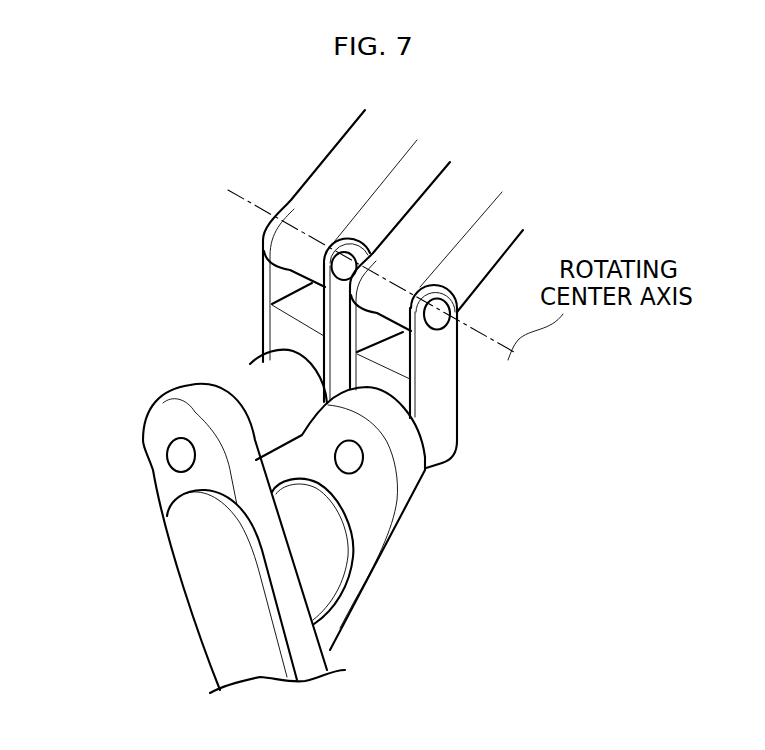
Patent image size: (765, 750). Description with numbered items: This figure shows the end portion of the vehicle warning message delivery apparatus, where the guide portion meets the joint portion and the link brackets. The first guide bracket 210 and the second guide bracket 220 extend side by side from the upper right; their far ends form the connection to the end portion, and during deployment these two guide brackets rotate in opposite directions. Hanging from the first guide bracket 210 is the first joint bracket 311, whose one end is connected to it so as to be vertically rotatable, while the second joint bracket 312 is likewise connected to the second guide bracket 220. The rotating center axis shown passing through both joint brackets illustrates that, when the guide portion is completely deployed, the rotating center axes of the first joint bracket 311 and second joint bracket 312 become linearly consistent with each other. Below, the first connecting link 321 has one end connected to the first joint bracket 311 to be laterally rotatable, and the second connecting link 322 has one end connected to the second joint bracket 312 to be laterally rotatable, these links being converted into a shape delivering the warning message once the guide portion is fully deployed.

The first guide bracket 210 is at (330, 170).
The second guide bracket 220 is at (455, 205).
The first joint bracket 311 is at (270, 313).
The second joint bracket 312 is at (447, 383).
The first connecting link 321 is at (193, 567).
The second connecting link 322 is at (362, 520).